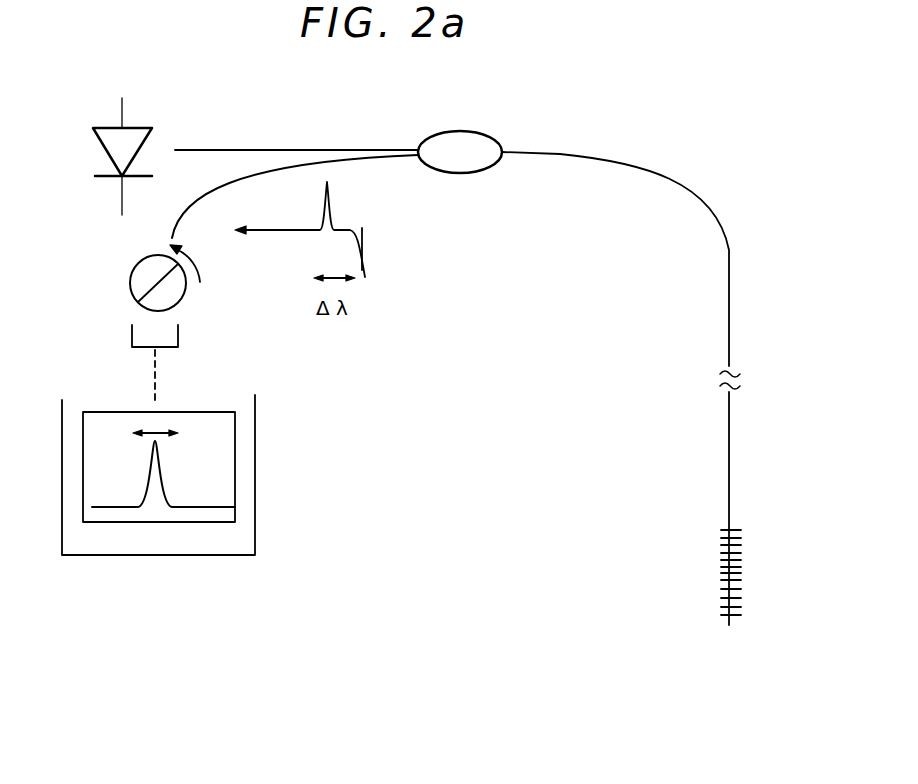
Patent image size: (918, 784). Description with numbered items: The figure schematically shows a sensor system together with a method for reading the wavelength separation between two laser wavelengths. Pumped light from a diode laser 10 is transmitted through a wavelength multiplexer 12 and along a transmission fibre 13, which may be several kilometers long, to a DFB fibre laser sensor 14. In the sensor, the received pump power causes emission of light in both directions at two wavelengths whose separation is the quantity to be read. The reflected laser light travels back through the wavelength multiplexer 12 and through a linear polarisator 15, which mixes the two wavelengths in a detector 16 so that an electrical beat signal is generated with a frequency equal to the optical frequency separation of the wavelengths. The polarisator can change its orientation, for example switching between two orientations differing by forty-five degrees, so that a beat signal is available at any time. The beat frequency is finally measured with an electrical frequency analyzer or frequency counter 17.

The diode laser 10 is at (122, 143).
The wavelength multiplexer 12 is at (338, 137).
The transmission fibre 13 is at (636, 388).
The DFB fibre laser sensor 14 is at (750, 572).
The linear polarisator 15 is at (137, 278).
The detector 16 is at (126, 364).
The frequency analyzer or frequency counter 17 is at (175, 475).